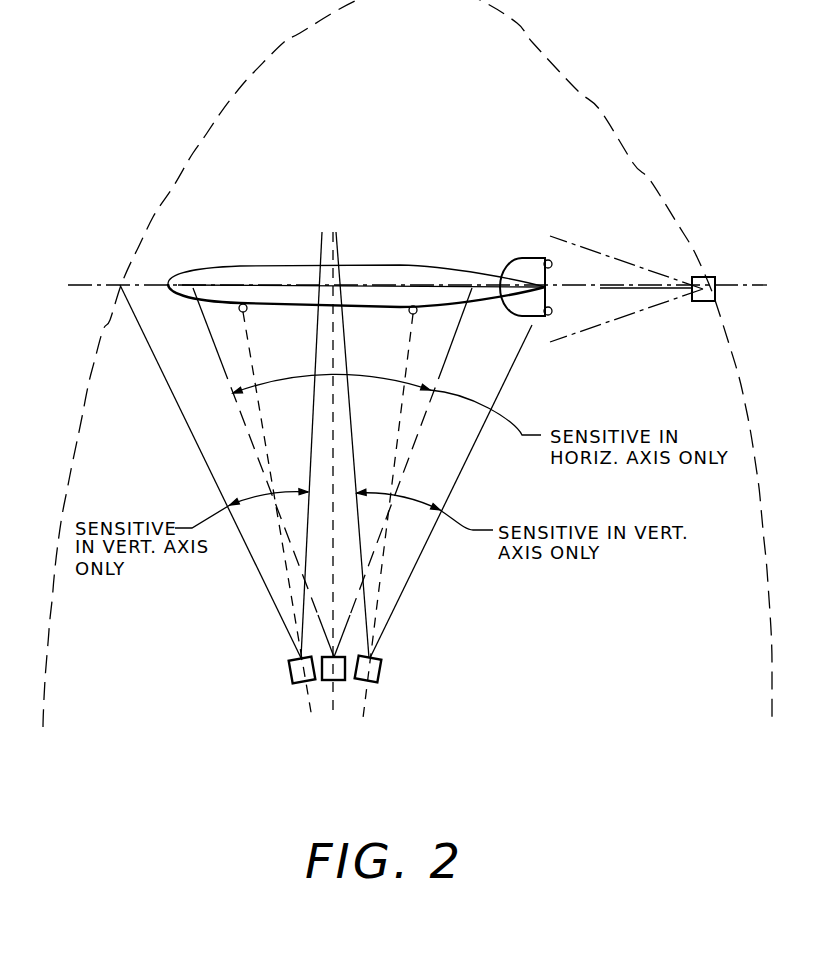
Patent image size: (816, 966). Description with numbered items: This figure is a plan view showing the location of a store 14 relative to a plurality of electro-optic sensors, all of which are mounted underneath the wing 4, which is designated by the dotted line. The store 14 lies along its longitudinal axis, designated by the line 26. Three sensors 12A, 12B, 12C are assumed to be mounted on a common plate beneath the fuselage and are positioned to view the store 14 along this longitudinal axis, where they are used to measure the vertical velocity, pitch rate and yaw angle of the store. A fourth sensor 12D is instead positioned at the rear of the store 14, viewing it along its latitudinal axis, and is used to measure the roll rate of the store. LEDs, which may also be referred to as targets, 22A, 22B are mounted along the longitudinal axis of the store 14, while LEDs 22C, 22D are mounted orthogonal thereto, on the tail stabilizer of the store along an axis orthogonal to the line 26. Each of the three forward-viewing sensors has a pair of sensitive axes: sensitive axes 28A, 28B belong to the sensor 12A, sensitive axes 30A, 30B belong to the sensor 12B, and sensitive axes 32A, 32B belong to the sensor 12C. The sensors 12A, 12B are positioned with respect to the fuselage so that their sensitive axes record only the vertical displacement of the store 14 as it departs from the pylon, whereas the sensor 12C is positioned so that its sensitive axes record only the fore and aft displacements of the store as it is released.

The wing 4 is at (230, 100).
The longitudinal axis line 26 is at (93, 286).
The store 14 is at (282, 264).
The LED 22A is at (245, 312).
The LED 22B is at (415, 314).
The LED 22C is at (553, 266).
The LED 22D is at (553, 309).
The sensor 12A is at (292, 677).
The sensor 12B is at (380, 676).
The sensor 12C is at (340, 682).
The sensor 12D is at (702, 303).
The sensitive axis 28A is at (176, 406).
The sensitive axis 28B is at (313, 388).
The sensitive axis 30A is at (355, 457).
The sensitive axis 30B is at (476, 442).
The sensitive axis 32A is at (259, 467).
The sensitive axis 32B is at (408, 465).